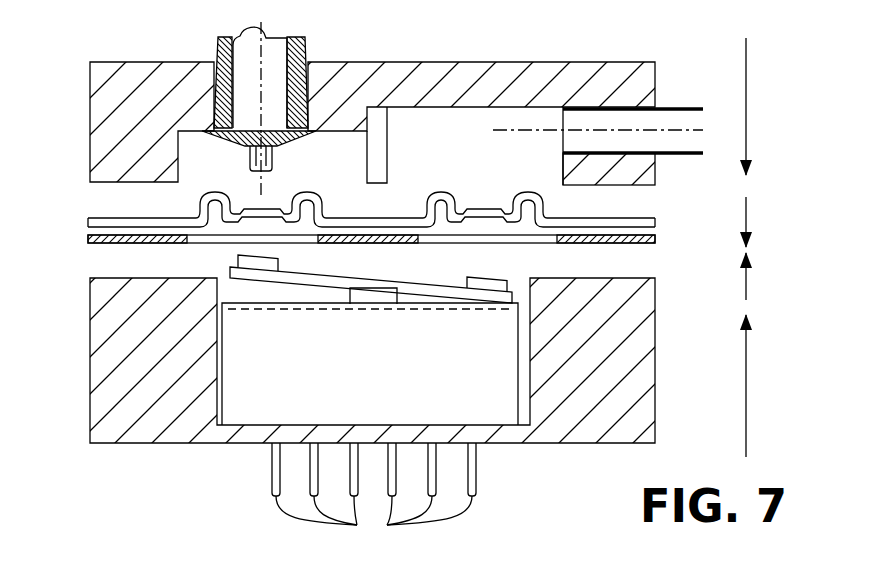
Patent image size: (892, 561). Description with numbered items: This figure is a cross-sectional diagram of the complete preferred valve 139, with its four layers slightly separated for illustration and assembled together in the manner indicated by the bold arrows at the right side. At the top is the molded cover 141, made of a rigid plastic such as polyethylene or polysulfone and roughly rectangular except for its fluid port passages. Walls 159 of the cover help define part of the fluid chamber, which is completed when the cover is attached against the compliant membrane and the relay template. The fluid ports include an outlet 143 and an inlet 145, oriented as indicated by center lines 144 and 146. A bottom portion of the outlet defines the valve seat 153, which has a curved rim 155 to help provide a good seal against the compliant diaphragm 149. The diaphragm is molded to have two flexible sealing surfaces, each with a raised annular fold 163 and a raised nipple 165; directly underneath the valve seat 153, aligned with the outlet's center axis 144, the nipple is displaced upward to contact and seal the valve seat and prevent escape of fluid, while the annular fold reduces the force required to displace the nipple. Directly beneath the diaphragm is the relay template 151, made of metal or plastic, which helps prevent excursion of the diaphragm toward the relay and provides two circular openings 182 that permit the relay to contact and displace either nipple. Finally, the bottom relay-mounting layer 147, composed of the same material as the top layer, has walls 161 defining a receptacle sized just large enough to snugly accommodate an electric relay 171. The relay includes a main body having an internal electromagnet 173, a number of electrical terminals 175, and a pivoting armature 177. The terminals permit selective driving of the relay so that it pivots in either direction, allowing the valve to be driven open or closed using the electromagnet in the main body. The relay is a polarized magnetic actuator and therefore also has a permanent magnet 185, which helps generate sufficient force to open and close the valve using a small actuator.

The valve 139 is at (482, 28).
The molded cover 141 is at (630, 82).
The outlet 143 is at (307, 53).
The center line 144 is at (267, 33).
The inlet 145 is at (675, 107).
The center line 146 is at (688, 128).
The relay-mounting layer 147 is at (650, 359).
The compliant diaphragm 149 is at (106, 212).
The relay template 151 is at (106, 247).
The valve seat 153 is at (246, 158).
The curved rim 155 is at (243, 170).
The walls 159 is at (652, 175).
The walls 161 is at (92, 284).
The raised annular fold 163 is at (305, 198).
The raised nipple 165 is at (268, 210).
The electric relay 171 is at (457, 402).
The electromagnet 173 is at (272, 417).
The electrical terminals 175 is at (374, 496).
The pivoting armature 177 is at (350, 283).
The circular openings 182 is at (423, 236).
The permanent magnet 185 is at (430, 305).